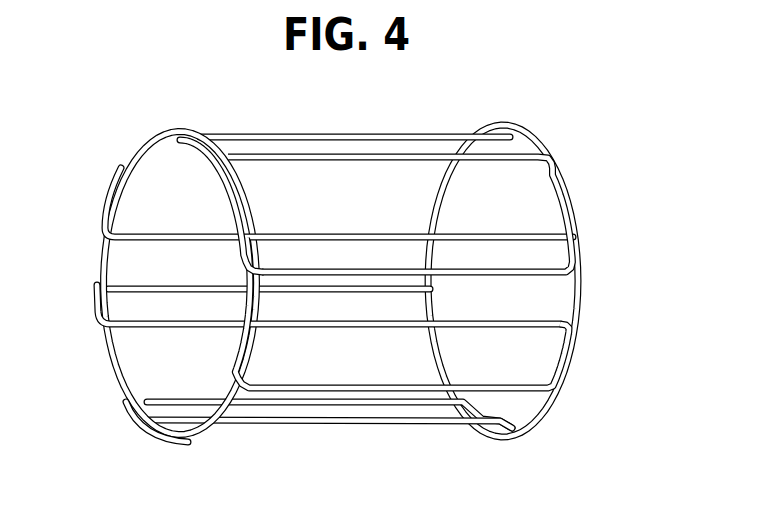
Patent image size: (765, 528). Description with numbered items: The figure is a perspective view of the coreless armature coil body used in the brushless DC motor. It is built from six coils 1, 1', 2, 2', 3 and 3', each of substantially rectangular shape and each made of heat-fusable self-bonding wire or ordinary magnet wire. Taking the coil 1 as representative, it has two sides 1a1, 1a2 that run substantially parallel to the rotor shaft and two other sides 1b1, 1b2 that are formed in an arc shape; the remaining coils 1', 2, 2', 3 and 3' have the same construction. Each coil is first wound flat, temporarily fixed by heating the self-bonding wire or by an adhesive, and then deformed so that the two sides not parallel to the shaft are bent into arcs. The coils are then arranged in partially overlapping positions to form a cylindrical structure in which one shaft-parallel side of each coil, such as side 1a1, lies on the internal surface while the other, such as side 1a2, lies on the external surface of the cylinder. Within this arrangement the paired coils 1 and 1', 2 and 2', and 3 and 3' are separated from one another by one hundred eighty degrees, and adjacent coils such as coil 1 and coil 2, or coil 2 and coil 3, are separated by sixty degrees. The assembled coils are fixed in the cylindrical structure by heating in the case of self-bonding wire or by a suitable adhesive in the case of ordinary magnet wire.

The coil 1 is at (410, 226).
The side of coil 1a1 is at (400, 131).
The side of coil 1a2 is at (541, 276).
The arc-shaped side of coil 1b1 is at (245, 188).
The arc-shaped side of coil 1b2 is at (566, 178).
The coil 1' is at (305, 317).
The coil 2 is at (402, 313).
The coil 2' is at (312, 202).
The coil 3 is at (180, 312).
The coil 3' is at (150, 267).